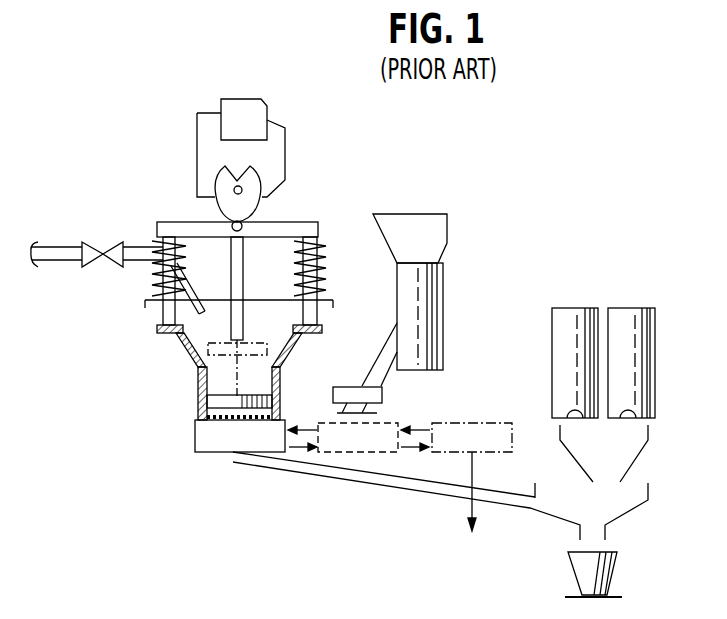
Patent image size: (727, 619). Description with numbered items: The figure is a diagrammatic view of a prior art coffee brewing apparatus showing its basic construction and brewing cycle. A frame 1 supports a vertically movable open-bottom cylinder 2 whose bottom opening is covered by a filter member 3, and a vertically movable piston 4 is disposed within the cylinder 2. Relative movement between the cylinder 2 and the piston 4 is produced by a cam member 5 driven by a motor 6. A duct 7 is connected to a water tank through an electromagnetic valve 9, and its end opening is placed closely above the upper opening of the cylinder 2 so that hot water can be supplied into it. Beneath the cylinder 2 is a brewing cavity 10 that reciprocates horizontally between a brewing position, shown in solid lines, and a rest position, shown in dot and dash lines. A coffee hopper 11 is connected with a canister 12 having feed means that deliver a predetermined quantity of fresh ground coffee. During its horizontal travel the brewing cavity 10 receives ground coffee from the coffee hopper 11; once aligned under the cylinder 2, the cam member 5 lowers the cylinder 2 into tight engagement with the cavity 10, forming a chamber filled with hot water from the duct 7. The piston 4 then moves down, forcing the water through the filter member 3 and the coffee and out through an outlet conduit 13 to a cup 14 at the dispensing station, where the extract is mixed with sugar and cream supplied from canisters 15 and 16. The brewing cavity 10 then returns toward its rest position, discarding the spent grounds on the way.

The frame 1 is at (171, 203).
The cylinder 2 is at (275, 383).
The filter member 3 is at (218, 422).
The piston 4 is at (217, 396).
The cam member 5 is at (251, 207).
The motor 6 is at (210, 113).
The duct 7 is at (47, 243).
The electromagnetic valve 9 is at (112, 267).
The brewing cavity 10 is at (473, 423).
The coffee hopper 11 is at (437, 297).
The canister 12 is at (377, 395).
The outlet conduit 13 is at (350, 480).
The cup 14 is at (608, 577).
The canister 15 is at (567, 312).
The canister 16 is at (638, 313).